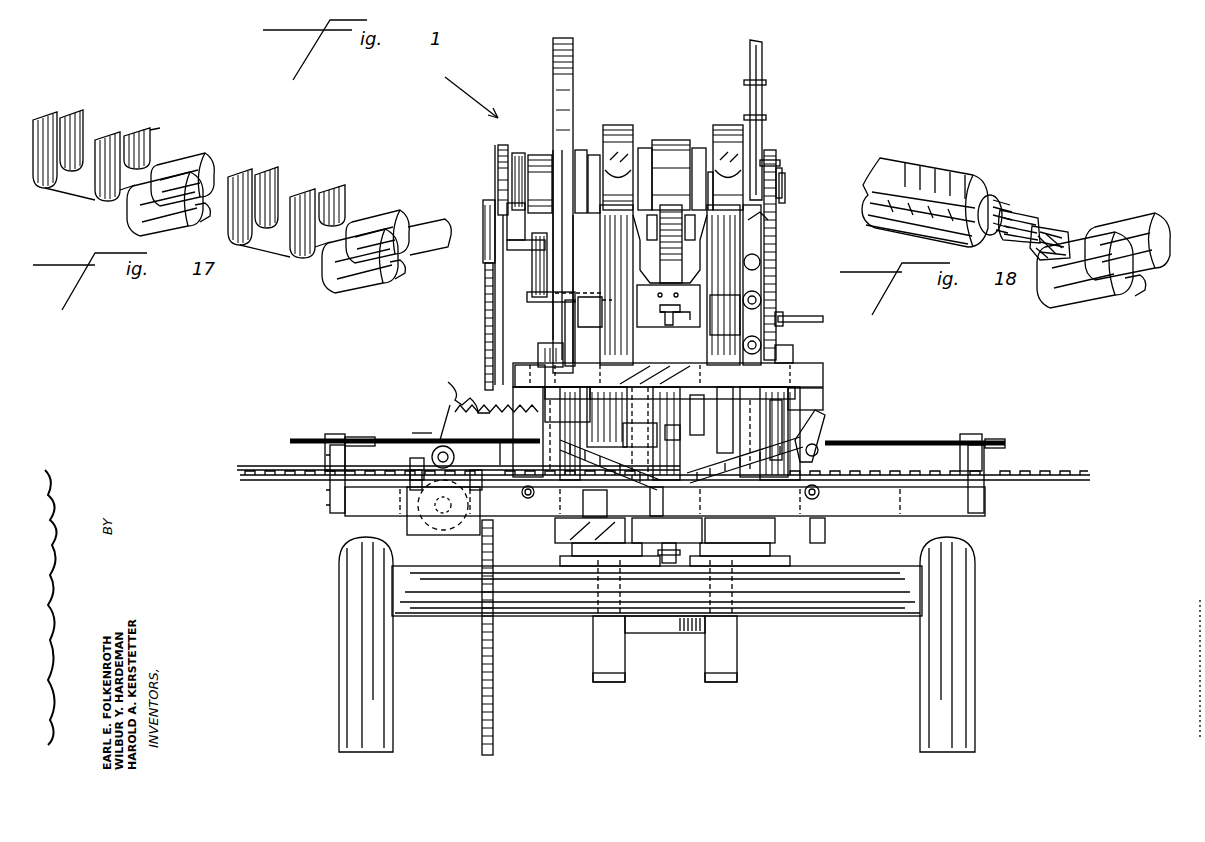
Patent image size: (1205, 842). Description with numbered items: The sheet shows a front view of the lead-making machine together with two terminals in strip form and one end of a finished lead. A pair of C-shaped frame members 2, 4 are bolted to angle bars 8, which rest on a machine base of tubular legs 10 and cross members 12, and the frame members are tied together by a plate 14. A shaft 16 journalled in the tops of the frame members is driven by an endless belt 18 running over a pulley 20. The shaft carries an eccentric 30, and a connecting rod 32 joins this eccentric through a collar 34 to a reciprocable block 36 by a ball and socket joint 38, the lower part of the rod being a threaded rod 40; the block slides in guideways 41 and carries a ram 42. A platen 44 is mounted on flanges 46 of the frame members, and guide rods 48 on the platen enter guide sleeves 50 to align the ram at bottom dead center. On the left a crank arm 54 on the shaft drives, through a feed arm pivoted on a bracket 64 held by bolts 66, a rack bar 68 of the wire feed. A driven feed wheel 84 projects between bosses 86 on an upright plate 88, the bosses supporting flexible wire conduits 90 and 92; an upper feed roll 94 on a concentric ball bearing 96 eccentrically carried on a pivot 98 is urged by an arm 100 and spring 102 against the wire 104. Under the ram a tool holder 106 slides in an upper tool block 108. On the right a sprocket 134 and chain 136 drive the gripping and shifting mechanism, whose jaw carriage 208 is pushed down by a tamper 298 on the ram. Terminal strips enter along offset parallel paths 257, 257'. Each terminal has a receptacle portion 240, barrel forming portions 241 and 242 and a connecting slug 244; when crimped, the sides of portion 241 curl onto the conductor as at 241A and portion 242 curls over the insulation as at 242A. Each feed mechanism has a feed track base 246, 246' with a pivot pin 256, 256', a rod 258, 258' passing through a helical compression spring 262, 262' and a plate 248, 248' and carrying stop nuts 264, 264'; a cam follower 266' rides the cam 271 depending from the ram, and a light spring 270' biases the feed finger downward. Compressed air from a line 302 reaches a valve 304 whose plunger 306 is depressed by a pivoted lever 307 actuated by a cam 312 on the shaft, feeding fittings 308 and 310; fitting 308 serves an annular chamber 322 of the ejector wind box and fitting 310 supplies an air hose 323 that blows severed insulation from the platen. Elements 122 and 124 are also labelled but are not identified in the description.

In FIG. 1, the C-shaped frame member 2 is at (598, 405).
In FIG. 1, the C-shaped frame member 4 is at (734, 408).
In FIG. 1, the angle bars 8 is at (590, 606).
In FIG. 1, the tubular legs 10 is at (352, 640).
In FIG. 1, the cross members 12 is at (875, 608).
In FIG. 1, the plate 14 is at (680, 633).
In FIG. 1, the shaft 16 is at (787, 188).
In FIG. 1, the endless belt 18 is at (563, 38).
In FIG. 1, the pulley 20 is at (574, 72).
In FIG. 1, the eccentric 30 is at (706, 145).
In FIG. 1, the connecting rod 32 is at (656, 165).
In FIG. 1, the collar 34 is at (664, 140).
In FIG. 1, the reciprocable block 36 is at (648, 306).
In FIG. 1, the ball and socket joint 38 is at (645, 282).
In FIG. 1, the threaded rod 40 is at (698, 268).
In FIG. 1, the guideways 41 is at (618, 258).
In FIG. 1, the ram 42 is at (570, 362).
In FIG. 1, the platen 44 is at (813, 525).
In FIG. 1, the flanges 46 is at (575, 550).
In FIG. 1, the guide rods 48 is at (543, 348).
In FIG. 1, the guide sleeves 50 is at (532, 377).
In FIG. 1, the crank arm 54 is at (498, 200).
In FIG. 1, the bracket 64 is at (530, 272).
In FIG. 1, the bolts 66 is at (596, 300).
In FIG. 1, the rack bar 68 is at (484, 320).
In FIG. 1, the feed wheel 84 is at (445, 540).
In FIG. 1, the bosses 86 is at (412, 488).
In FIG. 1, the upright plate 88 is at (432, 453).
In FIG. 1, the flexible wire conduit 90 is at (408, 464).
In FIG. 1, the flexible wire conduit 92 is at (565, 492).
In FIG. 1, the upper feed roll 94 is at (435, 440).
In FIG. 1, the concentric ball bearing 96 is at (442, 435).
In FIG. 1, the pivot 98 is at (415, 430).
In FIG. 1, the arm 100 is at (450, 398).
In FIG. 1, the spring 102 is at (465, 388).
In FIG. 18, the wire 104 is at (888, 178).
In FIG. 1, the wire 104 is at (236, 464).
In FIG. 1, the tool holder 106 is at (692, 432).
In FIG. 1, the upper tool block 108 is at (638, 378).
In FIG. 1, the insert 122 is at (678, 322).
In FIG. 1, the block 124 is at (731, 315).
In FIG. 1, the sprocket 134 is at (782, 162).
In FIG. 1, the chain 136 is at (772, 150).
In FIG. 1, the jaw carriage 208 is at (694, 520).
In FIG. 17, the receptacle portion 240 is at (165, 238).
In FIG. 18, the receptacle portion 240 is at (1136, 230).
In FIG. 17, the barrel forming portion 241 is at (98, 150).
In FIG. 18, the crimped barrel portion 241A is at (1030, 225).
In FIG. 17, the barrel forming portion 242 is at (45, 195).
In FIG. 18, the crimped insulation barrel 242A is at (990, 190).
In FIG. 17, the connecting slug 244 is at (190, 175).
In FIG. 1, the feed track base 246 is at (484, 512).
In FIG. 1, the feed track base 246' is at (837, 520).
In FIG. 1, the plate 248 is at (310, 479).
In FIG. 1, the plate 248' is at (1008, 479).
In FIG. 1, the pin 256 is at (590, 528).
In FIG. 1, the pin 256' is at (839, 498).
In FIG. 17, the terminal strip path 257 is at (171, 109).
In FIG. 1, the terminal strip path 257 is at (640, 490).
In FIG. 1, the terminal strip path 257' is at (963, 465).
In FIG. 1, the rod 258 is at (310, 437).
In FIG. 1, the rod 258' is at (1006, 443).
In FIG. 1, the helical compression spring 262 is at (394, 436).
In FIG. 1, the helical compression spring 262' is at (915, 431).
In FIG. 1, the adjustable stop nuts 264 is at (347, 415).
In FIG. 1, the adjustable stop nuts 264' is at (1017, 429).
In FIG. 1, the cam follower 266' is at (838, 430).
In FIG. 1, the light spring 270' is at (783, 460).
In FIG. 1, the cam 271 is at (822, 378).
In FIG. 1, the tamper 298 is at (716, 392).
In FIG. 1, the air line 302 is at (764, 66).
In FIG. 1, the valve 304 is at (764, 240).
In FIG. 1, the plunger 306 is at (766, 224).
In FIG. 1, the pivoted lever 307 is at (762, 263).
In FIG. 1, the fitting 308 is at (762, 300).
In FIG. 1, the fitting 310 is at (744, 345).
In FIG. 1, the cam 312 is at (785, 172).
In FIG. 1, the annular chamber 322 is at (823, 322).
In FIG. 1, the air hose 323 is at (668, 565).